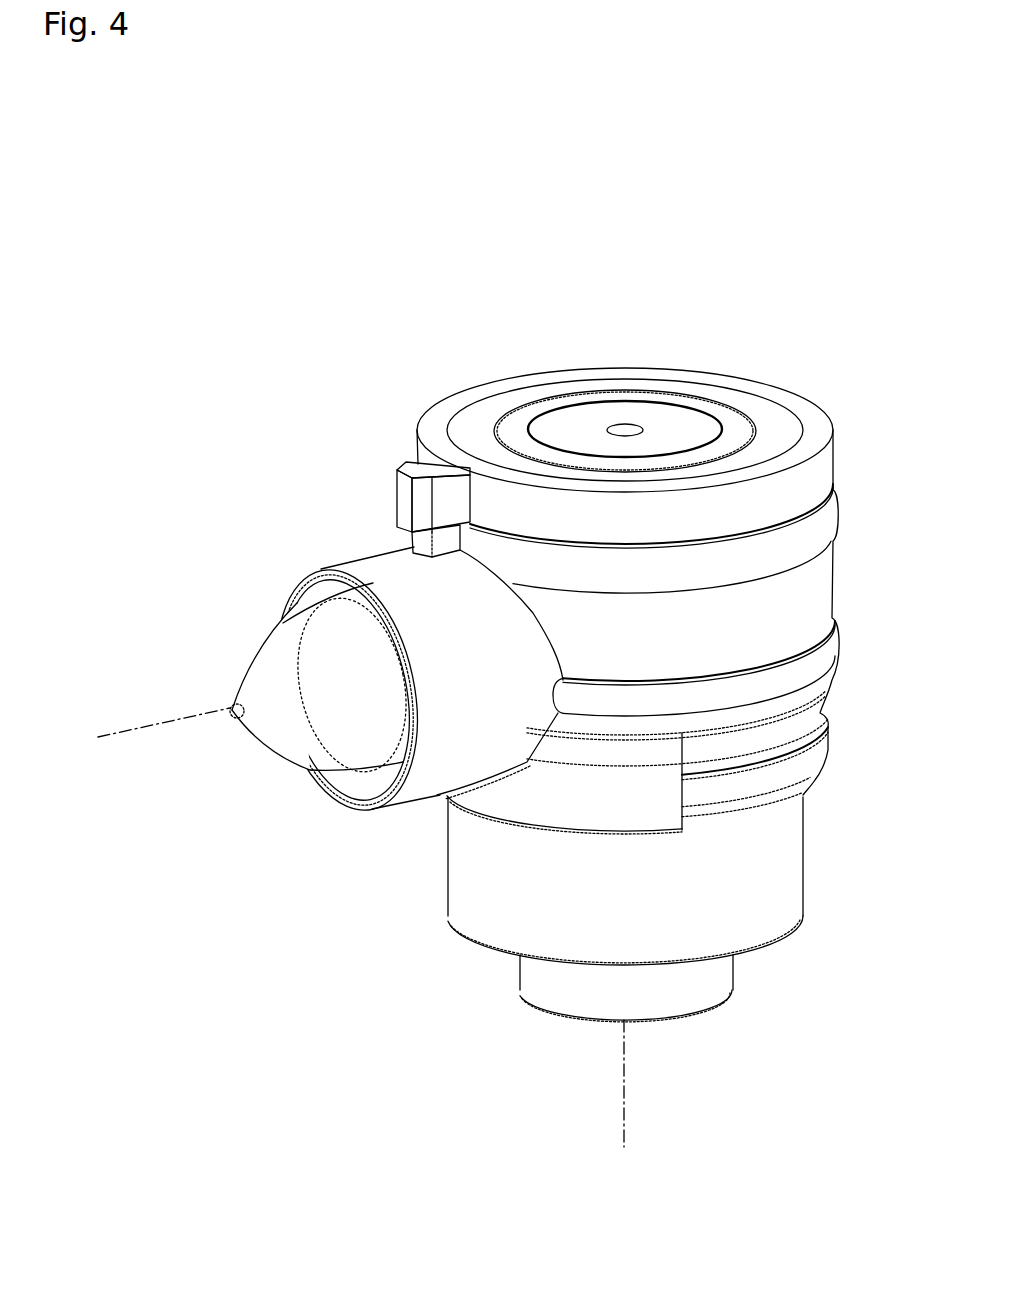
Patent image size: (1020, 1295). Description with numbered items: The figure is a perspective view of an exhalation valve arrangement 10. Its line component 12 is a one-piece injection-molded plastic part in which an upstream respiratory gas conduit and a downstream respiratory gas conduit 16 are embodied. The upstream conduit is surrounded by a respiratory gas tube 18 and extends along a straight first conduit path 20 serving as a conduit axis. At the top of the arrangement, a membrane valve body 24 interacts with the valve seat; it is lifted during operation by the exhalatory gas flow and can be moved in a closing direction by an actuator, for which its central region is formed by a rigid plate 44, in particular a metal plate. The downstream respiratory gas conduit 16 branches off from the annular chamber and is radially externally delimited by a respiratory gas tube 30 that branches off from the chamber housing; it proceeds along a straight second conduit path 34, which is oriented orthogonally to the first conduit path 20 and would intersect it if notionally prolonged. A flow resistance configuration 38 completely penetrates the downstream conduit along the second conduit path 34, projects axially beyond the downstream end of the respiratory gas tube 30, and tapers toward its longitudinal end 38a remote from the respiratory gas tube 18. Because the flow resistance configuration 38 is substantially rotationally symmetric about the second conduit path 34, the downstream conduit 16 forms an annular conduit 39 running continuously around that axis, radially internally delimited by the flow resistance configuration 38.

The exhalation valve arrangement 10 is at (384, 232).
The line component 12 is at (810, 931).
The downstream respiratory gas conduit 16 is at (347, 589).
The respiratory gas tube 18 is at (723, 973).
The first conduit path 20 is at (627, 1130).
The membrane valve body 24 is at (765, 340).
The respiratory gas tube 30 is at (378, 565).
The second conduit path 34 is at (162, 723).
The flow resistance configuration 38 is at (275, 728).
The longitudinal end 38a is at (232, 708).
The annular conduit 39 is at (338, 634).
The rigid plate 44 is at (583, 420).